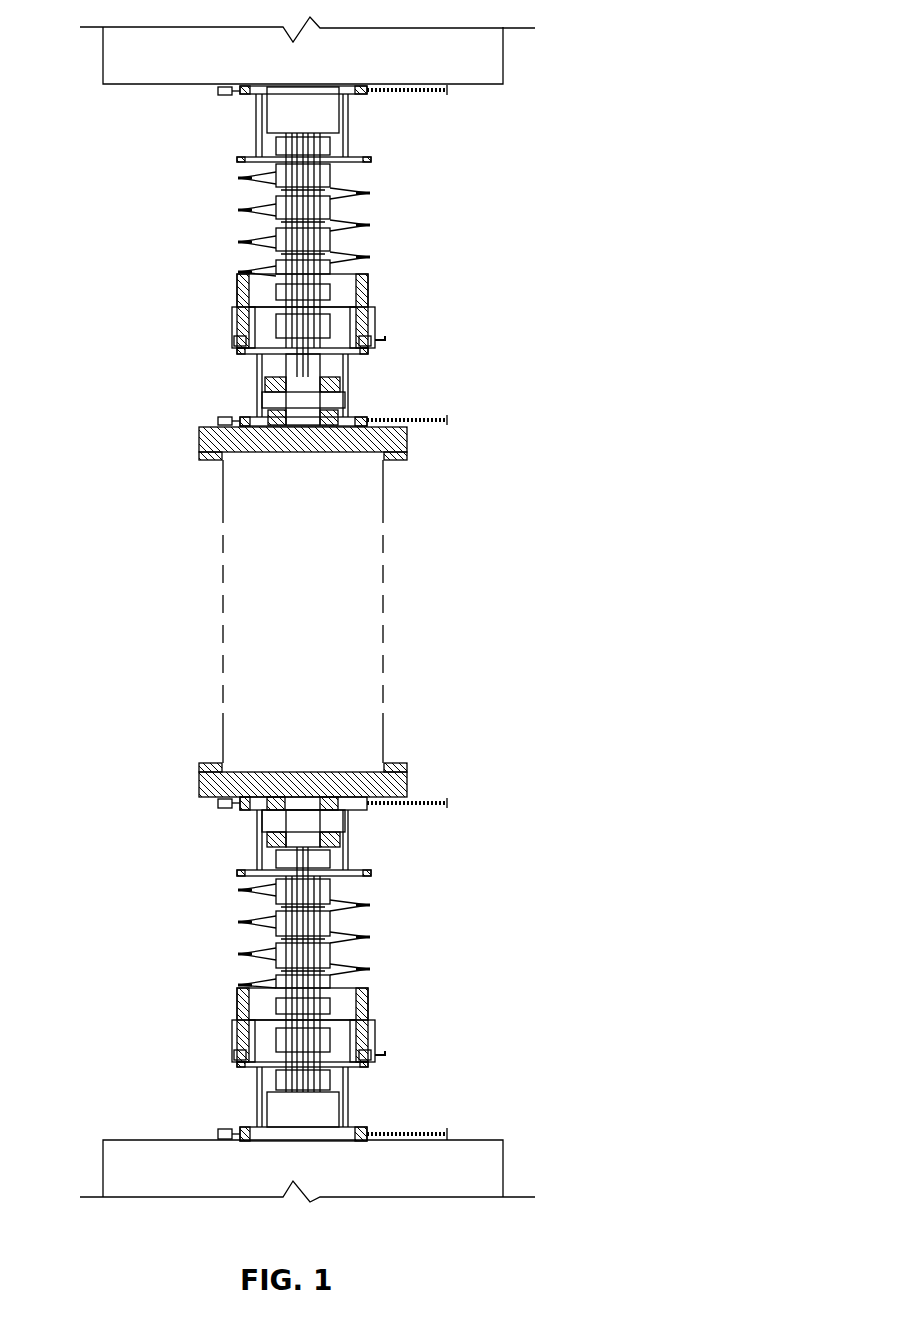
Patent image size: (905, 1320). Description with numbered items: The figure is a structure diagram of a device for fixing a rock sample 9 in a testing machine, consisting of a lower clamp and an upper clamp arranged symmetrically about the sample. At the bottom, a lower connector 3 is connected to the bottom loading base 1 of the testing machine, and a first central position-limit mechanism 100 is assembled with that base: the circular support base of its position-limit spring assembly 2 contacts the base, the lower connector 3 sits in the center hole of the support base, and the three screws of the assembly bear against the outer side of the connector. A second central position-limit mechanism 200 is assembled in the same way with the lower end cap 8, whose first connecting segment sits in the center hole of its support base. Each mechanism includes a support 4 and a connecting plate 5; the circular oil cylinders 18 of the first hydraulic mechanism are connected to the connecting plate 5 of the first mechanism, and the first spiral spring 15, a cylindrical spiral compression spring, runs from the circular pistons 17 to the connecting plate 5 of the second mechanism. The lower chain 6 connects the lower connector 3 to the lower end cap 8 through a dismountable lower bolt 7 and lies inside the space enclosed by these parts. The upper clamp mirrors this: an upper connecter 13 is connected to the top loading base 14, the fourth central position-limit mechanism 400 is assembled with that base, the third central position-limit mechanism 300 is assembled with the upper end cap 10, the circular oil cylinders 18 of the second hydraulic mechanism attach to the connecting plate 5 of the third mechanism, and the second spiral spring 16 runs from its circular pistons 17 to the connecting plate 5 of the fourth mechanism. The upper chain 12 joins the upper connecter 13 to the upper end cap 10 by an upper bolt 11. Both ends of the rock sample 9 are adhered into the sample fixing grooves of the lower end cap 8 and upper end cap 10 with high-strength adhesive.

The bottom loading base of a testing machine 1 is at (450, 1167).
The position-limit spring assembly 2 is at (215, 98).
The lower connector 3 is at (330, 1110).
The support 4 is at (258, 135).
The connecting plate 5 is at (240, 160).
The lower chain 6 is at (345, 920).
The lower bolt 7 is at (330, 825).
The lower end cap 8 is at (385, 783).
The rock sample 9 is at (365, 608).
The upper end cap 10 is at (407, 437).
The upper bolt 11 is at (322, 403).
The upper chain 12 is at (340, 237).
The upper connecter 13 is at (318, 113).
The top loading base of a testing machine 14 is at (452, 55).
The first spiral spring 15 is at (330, 972).
The second spiral spring 16 is at (345, 192).
The circular piston 17 is at (368, 283).
The circular oil cylinder 18 is at (377, 322).
The first central position-limit mechanism 100 is at (150, 1025).
The second central position-limit mechanism 200 is at (148, 798).
The third central position-limit mechanism 300 is at (150, 333).
The fourth central position-limit mechanism 400 is at (157, 89).